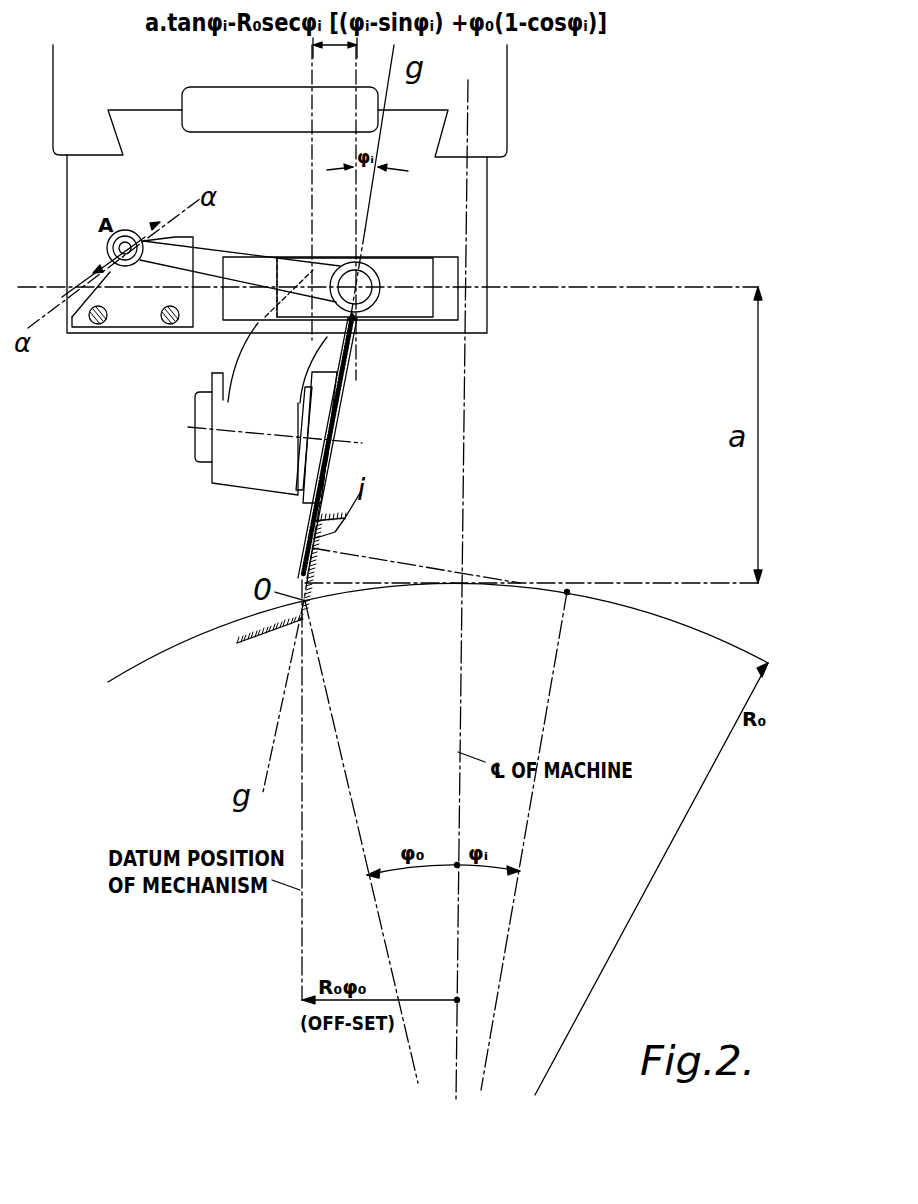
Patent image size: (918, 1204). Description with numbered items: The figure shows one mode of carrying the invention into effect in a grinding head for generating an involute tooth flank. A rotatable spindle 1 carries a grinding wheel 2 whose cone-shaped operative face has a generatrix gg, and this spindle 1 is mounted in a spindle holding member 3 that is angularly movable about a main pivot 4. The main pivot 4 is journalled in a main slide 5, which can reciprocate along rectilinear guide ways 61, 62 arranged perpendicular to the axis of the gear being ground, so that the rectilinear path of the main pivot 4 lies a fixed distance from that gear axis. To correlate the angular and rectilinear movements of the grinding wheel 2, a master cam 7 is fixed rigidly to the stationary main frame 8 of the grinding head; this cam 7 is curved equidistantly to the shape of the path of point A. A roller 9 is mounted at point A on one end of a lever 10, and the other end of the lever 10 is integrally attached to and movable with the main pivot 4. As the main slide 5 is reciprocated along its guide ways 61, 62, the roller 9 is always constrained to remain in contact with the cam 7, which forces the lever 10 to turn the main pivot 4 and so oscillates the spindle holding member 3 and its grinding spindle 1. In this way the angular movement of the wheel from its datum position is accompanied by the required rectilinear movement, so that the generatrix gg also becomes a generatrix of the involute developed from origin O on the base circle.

The rotatable spindle 1 is at (240, 480).
The grinding wheel 2 is at (330, 360).
The spindle holding member 3 is at (258, 357).
The main pivot 4 is at (364, 275).
The main slide 5 is at (400, 273).
The rectilinear guide way 61 is at (447, 257).
The rectilinear guide way 62 is at (440, 323).
The master cam 7 is at (137, 320).
The stationary main frame 8 is at (78, 181).
The roller 9 is at (128, 237).
The lever 10 is at (213, 250).